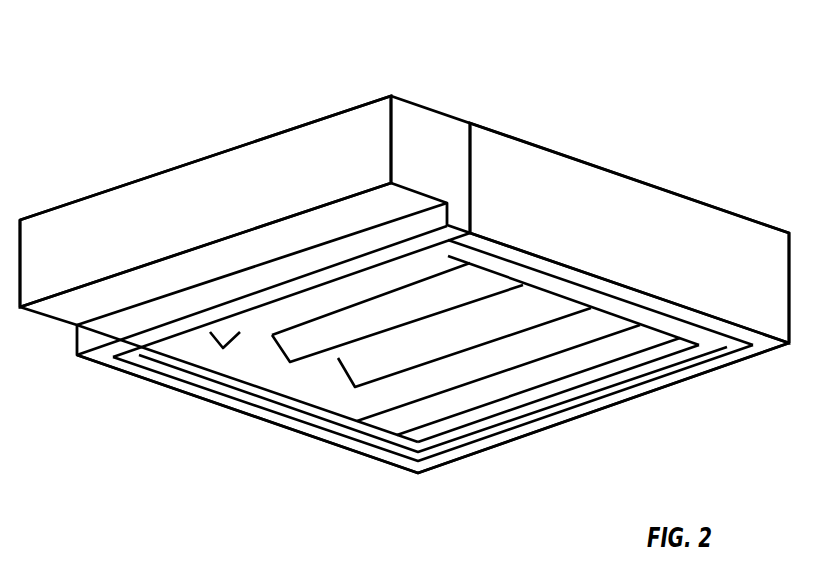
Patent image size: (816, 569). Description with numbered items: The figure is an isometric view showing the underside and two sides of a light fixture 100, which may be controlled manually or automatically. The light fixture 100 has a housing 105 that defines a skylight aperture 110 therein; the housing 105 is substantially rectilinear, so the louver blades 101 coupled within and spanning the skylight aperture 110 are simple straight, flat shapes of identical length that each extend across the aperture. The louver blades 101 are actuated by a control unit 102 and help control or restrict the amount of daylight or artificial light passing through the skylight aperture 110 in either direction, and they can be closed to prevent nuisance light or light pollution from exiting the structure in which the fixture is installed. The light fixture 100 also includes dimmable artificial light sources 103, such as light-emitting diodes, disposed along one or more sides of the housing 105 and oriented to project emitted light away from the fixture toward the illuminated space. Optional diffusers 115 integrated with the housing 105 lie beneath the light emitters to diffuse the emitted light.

The light fixture 100 is at (577, 84).
The louver blades 101 is at (300, 343).
The control unit 102 is at (127, 172).
The dimmable artificial light sources 103 is at (155, 360).
The housing 105 is at (660, 206).
The skylight aperture 110 is at (385, 386).
The diffusers 115 is at (527, 412).